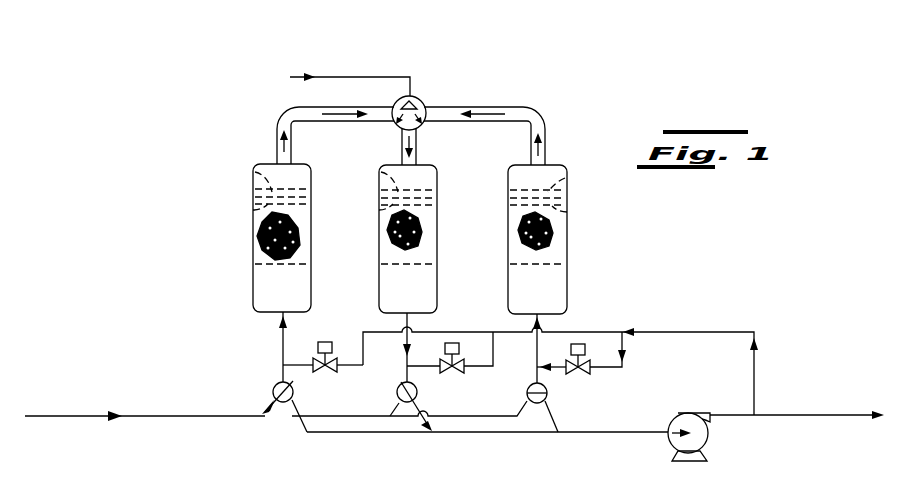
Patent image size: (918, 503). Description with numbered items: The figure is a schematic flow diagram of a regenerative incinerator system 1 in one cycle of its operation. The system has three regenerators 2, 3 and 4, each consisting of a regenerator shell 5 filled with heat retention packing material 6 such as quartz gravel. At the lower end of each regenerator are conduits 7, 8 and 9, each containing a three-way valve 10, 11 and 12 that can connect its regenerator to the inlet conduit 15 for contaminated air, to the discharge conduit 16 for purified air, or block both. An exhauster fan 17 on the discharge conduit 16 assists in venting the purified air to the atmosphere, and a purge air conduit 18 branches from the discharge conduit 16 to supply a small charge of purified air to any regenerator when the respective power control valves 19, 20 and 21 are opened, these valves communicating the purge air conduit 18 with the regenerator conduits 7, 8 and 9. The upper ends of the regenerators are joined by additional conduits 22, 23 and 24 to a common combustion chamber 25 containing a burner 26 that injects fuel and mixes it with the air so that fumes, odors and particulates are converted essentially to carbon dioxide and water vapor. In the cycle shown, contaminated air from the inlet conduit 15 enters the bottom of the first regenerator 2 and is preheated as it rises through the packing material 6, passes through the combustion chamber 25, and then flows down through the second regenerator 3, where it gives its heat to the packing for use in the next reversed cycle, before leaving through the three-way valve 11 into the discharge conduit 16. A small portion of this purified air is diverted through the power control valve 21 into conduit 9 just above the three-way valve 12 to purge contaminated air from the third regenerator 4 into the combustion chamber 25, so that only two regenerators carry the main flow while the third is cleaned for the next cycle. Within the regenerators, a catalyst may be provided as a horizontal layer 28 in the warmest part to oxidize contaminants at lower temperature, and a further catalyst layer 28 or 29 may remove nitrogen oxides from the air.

The regenerative incinerator system 1 is at (243, 238).
The first regenerator 2 is at (253, 288).
The second regenerator 3 is at (379, 288).
The third regenerator 4 is at (508, 288).
The regenerator shell 5 is at (253, 252).
The heat retention packing material 6 is at (300, 233).
The conduit 7 is at (282, 352).
The conduit 8 is at (406, 355).
The conduit 9 is at (536, 353).
The three-way valve 10 is at (272, 392).
The three-way valve 11 is at (397, 392).
The three-way valve 12 is at (526, 393).
The inlet conduit 15 is at (200, 418).
The discharge conduit 16 is at (622, 434).
The exhauster fan 17 is at (702, 447).
The purge air conduit 18 is at (754, 362).
The power control valve 19 is at (325, 373).
The power control valve 20 is at (452, 374).
The power control valve 21 is at (578, 375).
The conduit 22 is at (276, 140).
The conduit 23 is at (402, 147).
The conduit 24 is at (530, 148).
The combustion chamber 25 is at (420, 100).
The burner 26 is at (398, 103).
The horizontal layer 28 is at (253, 173).
The horizontal layer 29 is at (253, 210).